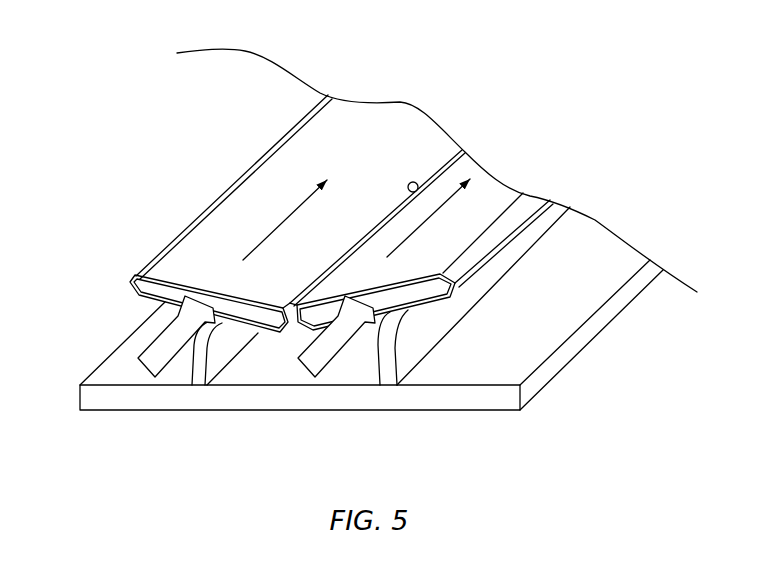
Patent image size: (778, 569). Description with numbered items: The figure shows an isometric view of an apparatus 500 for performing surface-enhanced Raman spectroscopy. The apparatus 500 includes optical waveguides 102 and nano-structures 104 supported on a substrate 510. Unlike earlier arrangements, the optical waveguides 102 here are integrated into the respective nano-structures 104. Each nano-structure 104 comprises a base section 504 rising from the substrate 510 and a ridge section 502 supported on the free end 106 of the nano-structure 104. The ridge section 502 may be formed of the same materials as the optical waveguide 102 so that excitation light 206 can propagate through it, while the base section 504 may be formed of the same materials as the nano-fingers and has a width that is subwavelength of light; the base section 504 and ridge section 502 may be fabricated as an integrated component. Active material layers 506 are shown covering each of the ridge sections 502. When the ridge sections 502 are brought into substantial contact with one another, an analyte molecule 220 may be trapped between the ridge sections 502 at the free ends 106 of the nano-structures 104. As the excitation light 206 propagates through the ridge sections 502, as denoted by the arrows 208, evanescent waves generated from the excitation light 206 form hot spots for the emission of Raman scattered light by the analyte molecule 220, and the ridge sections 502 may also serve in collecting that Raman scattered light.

The apparatus 500 is at (125, 62).
The optical waveguide 102 is at (158, 153).
The nano-structure 104 is at (262, 130).
The arrows 208 is at (268, 233).
The analyte molecule 220 is at (413, 182).
The active material layer 506 is at (172, 262).
The ridge section 502 is at (141, 276).
The excitation light 206 is at (139, 331).
The substrate 510 is at (165, 412).
The base section 504 is at (228, 369).
The free end 106 is at (397, 318).